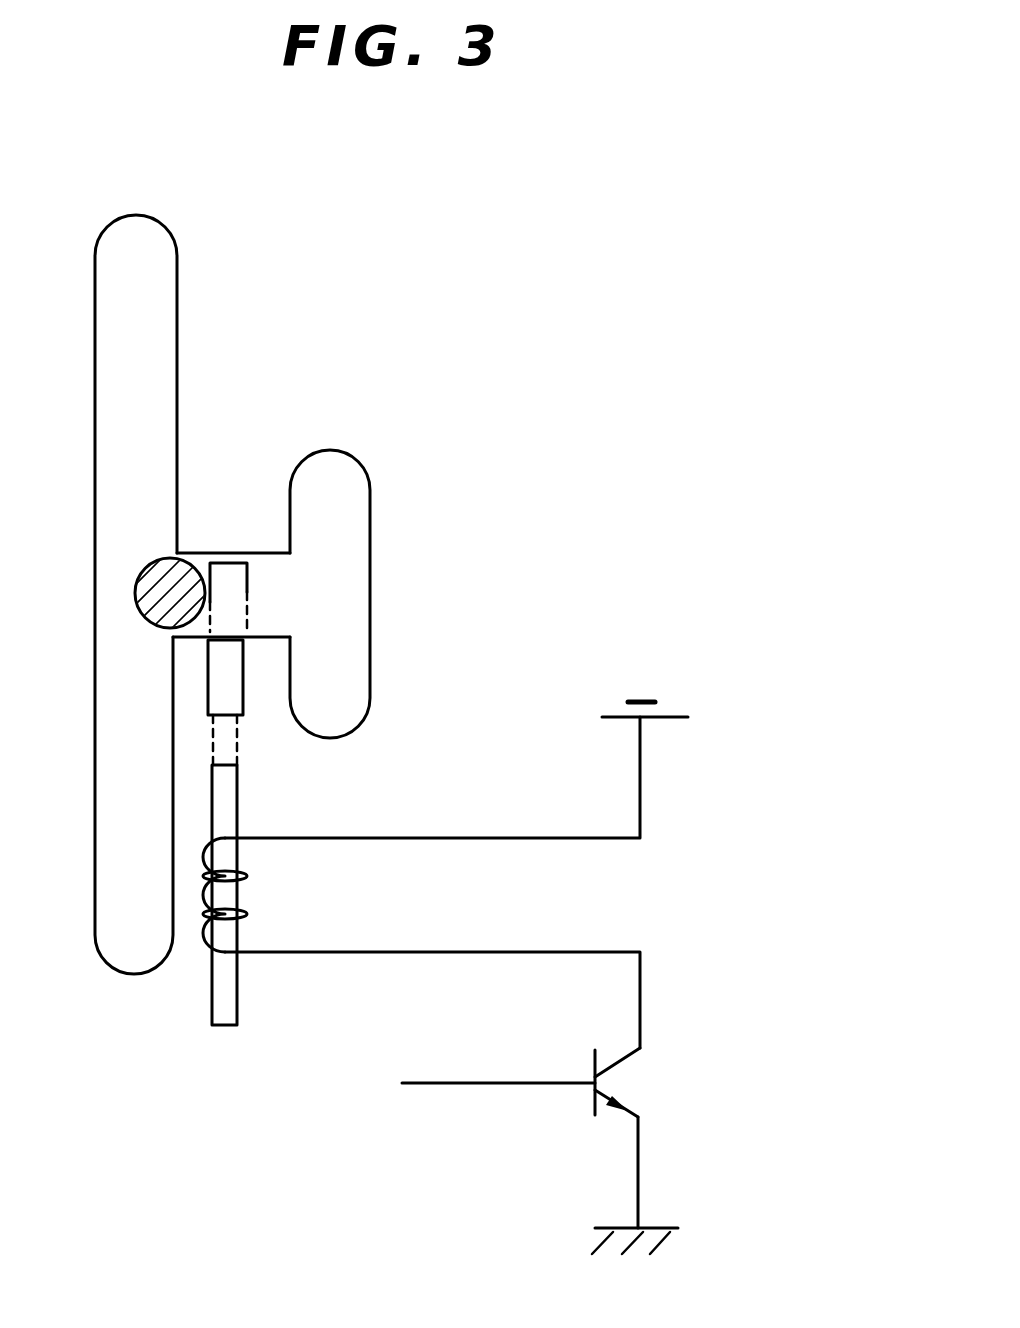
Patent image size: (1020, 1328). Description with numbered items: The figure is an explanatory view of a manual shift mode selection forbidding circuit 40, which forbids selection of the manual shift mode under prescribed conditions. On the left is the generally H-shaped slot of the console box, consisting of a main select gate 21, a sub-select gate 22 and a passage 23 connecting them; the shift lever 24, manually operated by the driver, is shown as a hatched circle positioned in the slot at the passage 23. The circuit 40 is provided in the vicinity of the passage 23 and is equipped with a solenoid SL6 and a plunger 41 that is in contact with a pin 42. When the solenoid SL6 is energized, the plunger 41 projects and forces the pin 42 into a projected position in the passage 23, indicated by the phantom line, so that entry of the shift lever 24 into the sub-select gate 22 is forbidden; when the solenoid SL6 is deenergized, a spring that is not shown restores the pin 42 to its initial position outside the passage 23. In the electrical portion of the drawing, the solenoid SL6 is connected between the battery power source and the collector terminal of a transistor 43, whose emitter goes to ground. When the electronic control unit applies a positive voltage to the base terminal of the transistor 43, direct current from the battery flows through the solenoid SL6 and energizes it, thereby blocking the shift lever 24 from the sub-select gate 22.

The main select gate 21 is at (148, 295).
The sub-select gate 22 is at (343, 495).
The passage 23 is at (260, 562).
The shift lever 24 is at (152, 558).
The plunger 41 is at (240, 745).
The pin 42 is at (250, 593).
The manual shift mode selection forbidding circuit 40 is at (702, 834).
The transistor 43 is at (640, 1072).
The solenoid SL6 is at (188, 998).